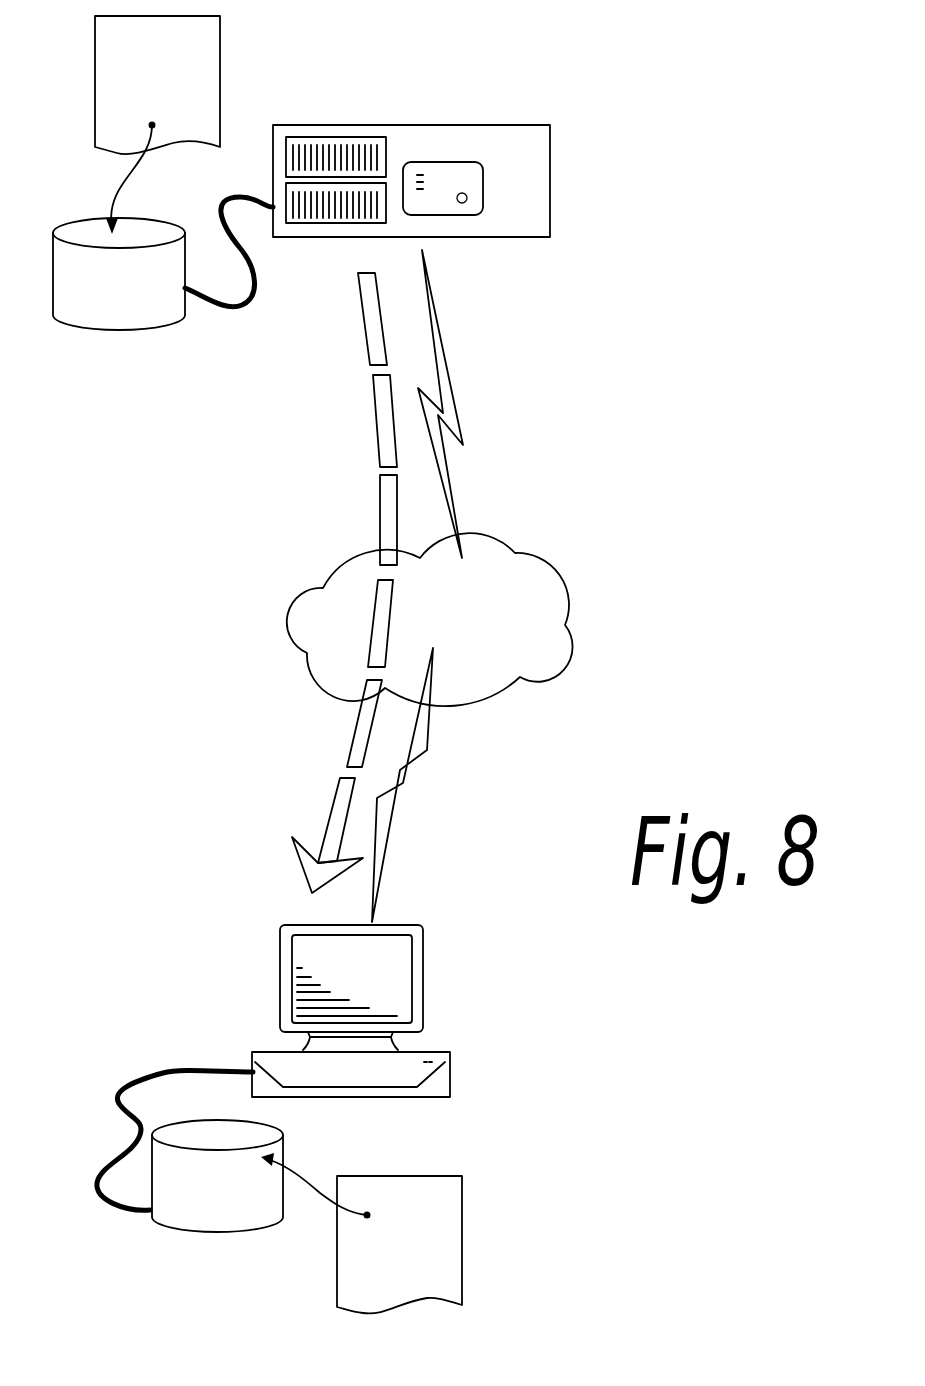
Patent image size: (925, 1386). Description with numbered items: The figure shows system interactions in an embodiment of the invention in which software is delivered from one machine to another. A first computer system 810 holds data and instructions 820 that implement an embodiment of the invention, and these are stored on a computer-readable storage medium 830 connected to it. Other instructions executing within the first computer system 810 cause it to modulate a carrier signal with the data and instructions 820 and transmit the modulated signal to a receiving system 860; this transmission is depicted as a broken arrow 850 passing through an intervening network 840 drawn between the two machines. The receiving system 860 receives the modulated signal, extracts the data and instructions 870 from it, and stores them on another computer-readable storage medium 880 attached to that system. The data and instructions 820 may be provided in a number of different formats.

The first computer system 810 is at (530, 238).
The data and instructions 820 is at (220, 38).
The computer-readable storage medium 830 is at (175, 316).
The network cloud 840 is at (547, 657).
The broken arrow 850 is at (382, 483).
The receiving system 860 is at (438, 1052).
The data and instructions 870 is at (462, 1283).
The computer-readable storage medium 880 is at (273, 1215).